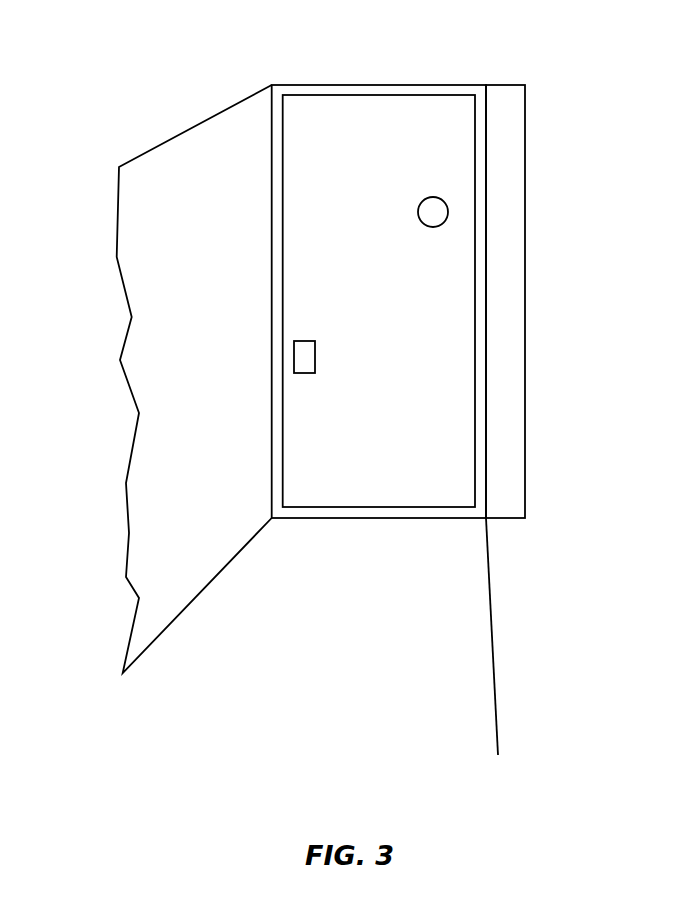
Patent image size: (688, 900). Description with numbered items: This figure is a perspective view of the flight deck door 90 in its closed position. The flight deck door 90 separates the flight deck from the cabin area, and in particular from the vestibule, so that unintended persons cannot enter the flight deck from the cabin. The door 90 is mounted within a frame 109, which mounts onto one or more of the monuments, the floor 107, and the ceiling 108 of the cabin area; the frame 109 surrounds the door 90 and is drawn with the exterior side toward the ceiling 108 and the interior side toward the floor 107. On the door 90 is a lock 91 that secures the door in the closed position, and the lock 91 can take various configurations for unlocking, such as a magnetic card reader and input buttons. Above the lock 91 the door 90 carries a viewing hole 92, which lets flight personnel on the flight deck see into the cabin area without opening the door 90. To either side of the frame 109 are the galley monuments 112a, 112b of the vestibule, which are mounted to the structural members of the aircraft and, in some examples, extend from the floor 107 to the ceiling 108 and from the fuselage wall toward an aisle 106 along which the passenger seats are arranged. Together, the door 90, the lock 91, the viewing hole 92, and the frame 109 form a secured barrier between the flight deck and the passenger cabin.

The aisle 106 is at (200, 694).
The floor 107 is at (301, 603).
The ceiling 108 is at (301, 34).
The frame 109 is at (441, 90).
The flight deck door 90 is at (442, 318).
The lock 91 is at (303, 357).
The viewing hole 92 is at (433, 212).
The galley monument 112a is at (161, 372).
The galley monument 112b is at (507, 142).